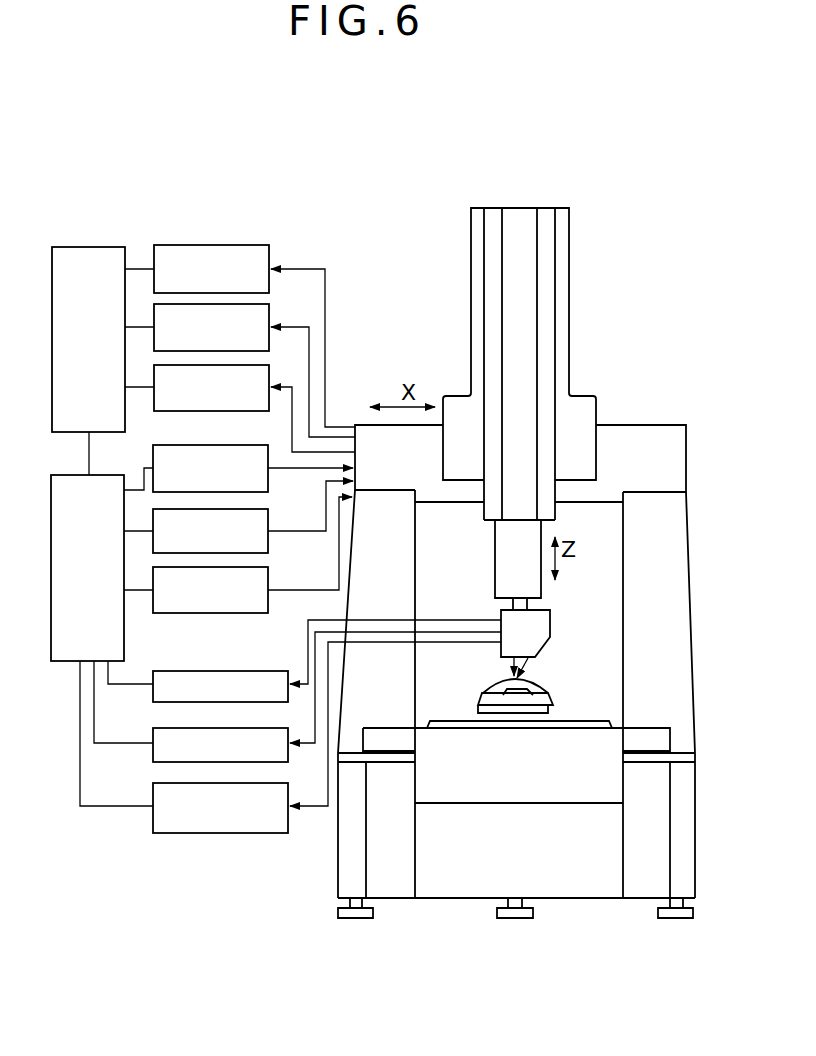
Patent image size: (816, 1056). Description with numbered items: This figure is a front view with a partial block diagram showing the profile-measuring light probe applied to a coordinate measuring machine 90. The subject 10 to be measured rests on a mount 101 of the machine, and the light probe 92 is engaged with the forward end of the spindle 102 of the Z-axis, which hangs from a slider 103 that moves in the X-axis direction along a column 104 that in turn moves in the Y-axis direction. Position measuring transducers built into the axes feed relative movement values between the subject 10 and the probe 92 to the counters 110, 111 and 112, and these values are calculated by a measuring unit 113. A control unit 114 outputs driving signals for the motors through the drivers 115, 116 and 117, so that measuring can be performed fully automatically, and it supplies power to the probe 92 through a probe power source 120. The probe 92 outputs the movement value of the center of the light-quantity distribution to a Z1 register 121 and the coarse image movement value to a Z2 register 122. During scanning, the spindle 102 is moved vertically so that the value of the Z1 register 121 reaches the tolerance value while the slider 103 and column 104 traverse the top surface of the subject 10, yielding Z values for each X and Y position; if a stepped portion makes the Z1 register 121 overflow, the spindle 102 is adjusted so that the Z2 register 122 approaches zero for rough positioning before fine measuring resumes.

The subject to be measured 10 is at (550, 692).
The coordinate measuring machine 90 is at (699, 330).
The light probe 92 is at (540, 628).
The mount 101 is at (603, 767).
The spindle of Z-axis 102 is at (538, 532).
The slider 103 is at (582, 403).
The column 104 is at (677, 437).
The X-axis counter 110 is at (257, 245).
The Y-axis counter 111 is at (269, 306).
The Z-axis counter 112 is at (269, 368).
The measuring unit 113 is at (98, 247).
The control unit 114 is at (105, 475).
The X-axis driver 115 is at (272, 438).
The Y-axis driver 116 is at (268, 517).
The Z-axis driver 117 is at (268, 573).
The probe power source 120 is at (290, 800).
The Z1 register 121 is at (283, 671).
The Z2 register 122 is at (293, 724).